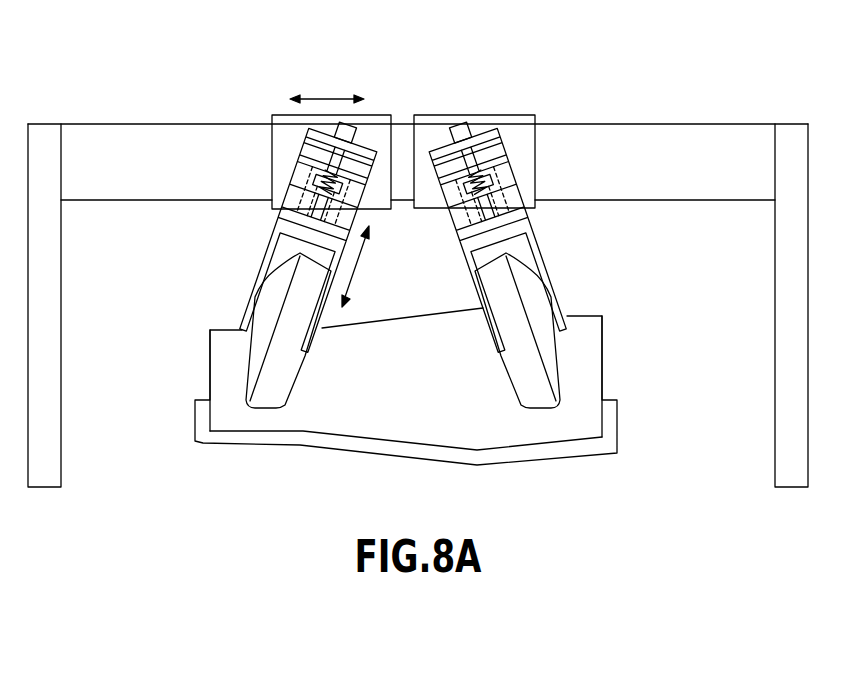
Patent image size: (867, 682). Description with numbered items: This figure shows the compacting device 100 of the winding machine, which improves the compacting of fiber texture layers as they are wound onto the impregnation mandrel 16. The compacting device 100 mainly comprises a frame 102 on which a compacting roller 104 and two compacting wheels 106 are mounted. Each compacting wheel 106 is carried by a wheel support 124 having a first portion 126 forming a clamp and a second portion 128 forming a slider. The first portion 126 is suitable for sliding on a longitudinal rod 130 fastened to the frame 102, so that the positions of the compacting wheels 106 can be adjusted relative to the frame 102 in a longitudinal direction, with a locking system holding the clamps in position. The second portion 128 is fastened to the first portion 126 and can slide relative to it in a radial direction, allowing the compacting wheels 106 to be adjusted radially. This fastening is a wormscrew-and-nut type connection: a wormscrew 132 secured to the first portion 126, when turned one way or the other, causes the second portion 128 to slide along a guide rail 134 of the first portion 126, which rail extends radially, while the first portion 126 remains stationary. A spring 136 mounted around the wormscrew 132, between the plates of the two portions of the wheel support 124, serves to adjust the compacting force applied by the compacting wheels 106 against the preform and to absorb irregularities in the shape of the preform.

The compacting device 100 is at (418, 251).
The frame 102 is at (66, 256).
The compacting roller 104 is at (486, 436).
The compacting wheel 106 is at (293, 357).
The impregnation mandrel 16 is at (203, 444).
The wheel support 124 is at (288, 67).
The first portion 126 is at (287, 128).
The second portion 128 is at (267, 247).
The longitudinal rod 130 is at (149, 138).
The wormscrew 132 is at (455, 126).
The guide rail 134 is at (471, 218).
The spring 136 is at (468, 186).